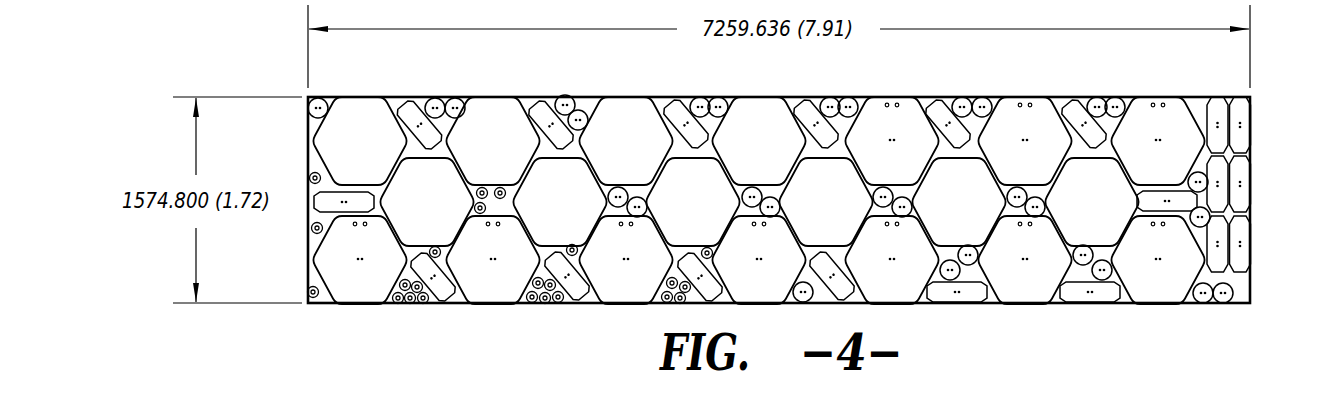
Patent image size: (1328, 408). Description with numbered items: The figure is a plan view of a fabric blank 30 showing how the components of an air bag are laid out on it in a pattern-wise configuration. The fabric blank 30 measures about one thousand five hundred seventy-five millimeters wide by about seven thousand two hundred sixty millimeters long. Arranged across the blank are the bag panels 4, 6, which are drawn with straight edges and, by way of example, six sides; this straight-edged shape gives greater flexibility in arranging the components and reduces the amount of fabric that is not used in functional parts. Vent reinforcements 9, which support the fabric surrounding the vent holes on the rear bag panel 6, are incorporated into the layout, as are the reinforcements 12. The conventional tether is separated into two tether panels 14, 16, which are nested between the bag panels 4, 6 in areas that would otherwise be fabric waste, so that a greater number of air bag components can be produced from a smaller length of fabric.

The bag panel 4 is at (758, 103).
The rear bag panel 6 is at (1153, 290).
The vent reinforcement 9 is at (543, 298).
The reinforcement 12 is at (963, 103).
The tether panel 14 is at (1245, 176).
The tether panel 16 is at (542, 103).
The fabric blank 30 is at (1190, 306).